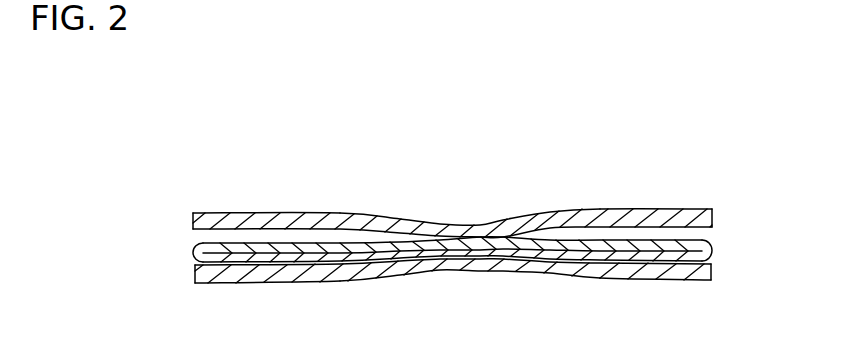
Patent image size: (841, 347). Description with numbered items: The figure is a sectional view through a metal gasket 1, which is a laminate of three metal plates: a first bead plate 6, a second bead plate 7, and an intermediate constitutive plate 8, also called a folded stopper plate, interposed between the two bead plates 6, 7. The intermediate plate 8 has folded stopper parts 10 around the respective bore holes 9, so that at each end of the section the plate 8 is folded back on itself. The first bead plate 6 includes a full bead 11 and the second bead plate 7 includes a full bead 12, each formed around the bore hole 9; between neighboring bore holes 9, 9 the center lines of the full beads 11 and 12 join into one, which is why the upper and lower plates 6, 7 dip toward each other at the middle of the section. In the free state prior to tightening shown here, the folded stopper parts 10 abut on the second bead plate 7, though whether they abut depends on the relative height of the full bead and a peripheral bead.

The metal gasket 1 is at (538, 190).
The first bead plate 6 is at (667, 212).
The second bead plate 7 is at (672, 274).
The intermediate constitutive plate 8 is at (546, 247).
The bore hole 9 is at (185, 266).
The folded stopper part 10 is at (257, 264).
The full bead 11 is at (483, 220).
The full bead 12 is at (465, 270).